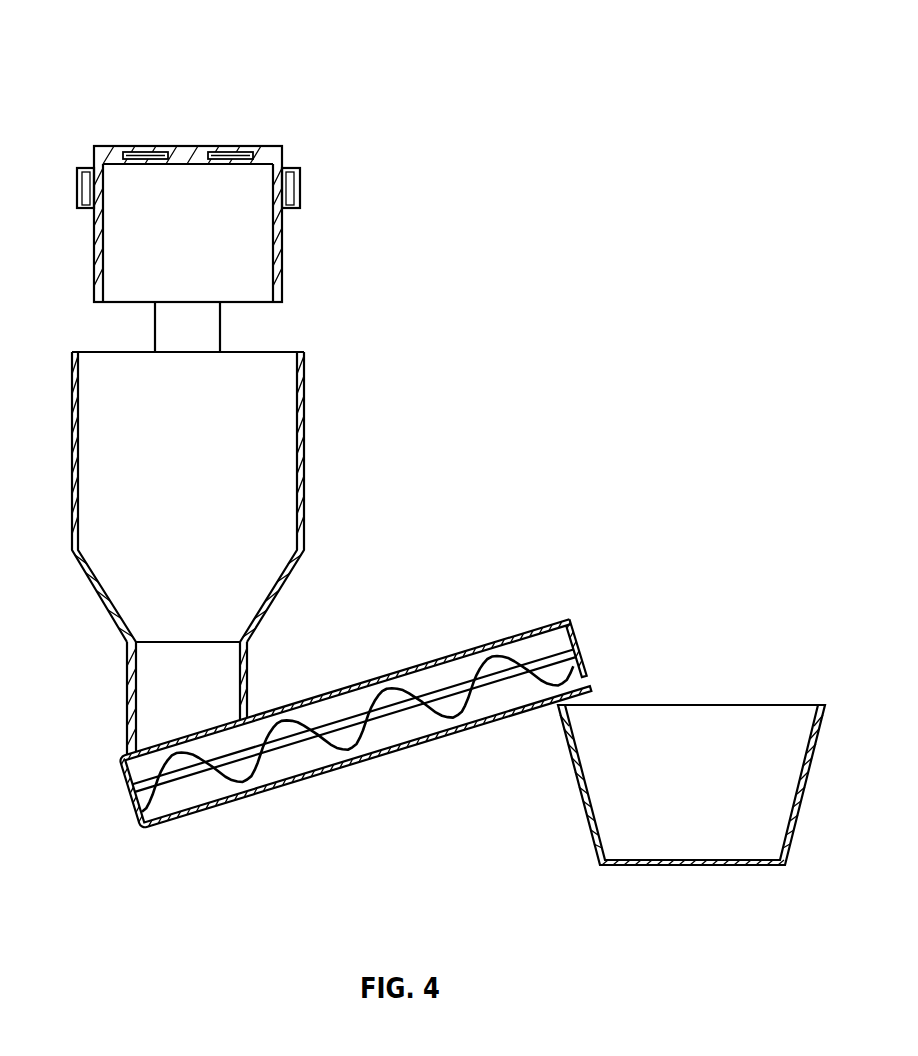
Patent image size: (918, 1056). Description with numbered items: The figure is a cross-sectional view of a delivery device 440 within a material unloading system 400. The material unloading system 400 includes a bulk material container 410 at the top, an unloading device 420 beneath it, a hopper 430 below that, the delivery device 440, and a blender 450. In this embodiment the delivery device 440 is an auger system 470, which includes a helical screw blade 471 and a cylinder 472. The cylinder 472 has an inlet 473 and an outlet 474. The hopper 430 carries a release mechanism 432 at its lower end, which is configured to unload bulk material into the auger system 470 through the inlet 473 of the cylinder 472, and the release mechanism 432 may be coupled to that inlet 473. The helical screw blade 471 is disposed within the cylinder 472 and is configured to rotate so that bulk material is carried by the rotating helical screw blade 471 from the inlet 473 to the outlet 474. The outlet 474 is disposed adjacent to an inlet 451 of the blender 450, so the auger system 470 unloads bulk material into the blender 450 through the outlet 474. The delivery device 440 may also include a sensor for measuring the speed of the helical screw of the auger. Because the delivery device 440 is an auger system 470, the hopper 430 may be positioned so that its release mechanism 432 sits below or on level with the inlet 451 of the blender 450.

The material unloading system 400 is at (292, 72).
The bulk material container 410 is at (283, 164).
The unloading device 420 is at (223, 312).
The hopper 430 is at (305, 410).
The release mechanism 432 is at (127, 668).
The delivery device 440 is at (548, 527).
The blender 450 is at (757, 868).
The inlet of the blender 451 is at (781, 705).
The auger system 470 is at (510, 635).
The helical screw blade 471 is at (440, 688).
The cylinder 472 is at (357, 680).
The inlet 473 is at (197, 737).
The outlet 474 is at (578, 650).